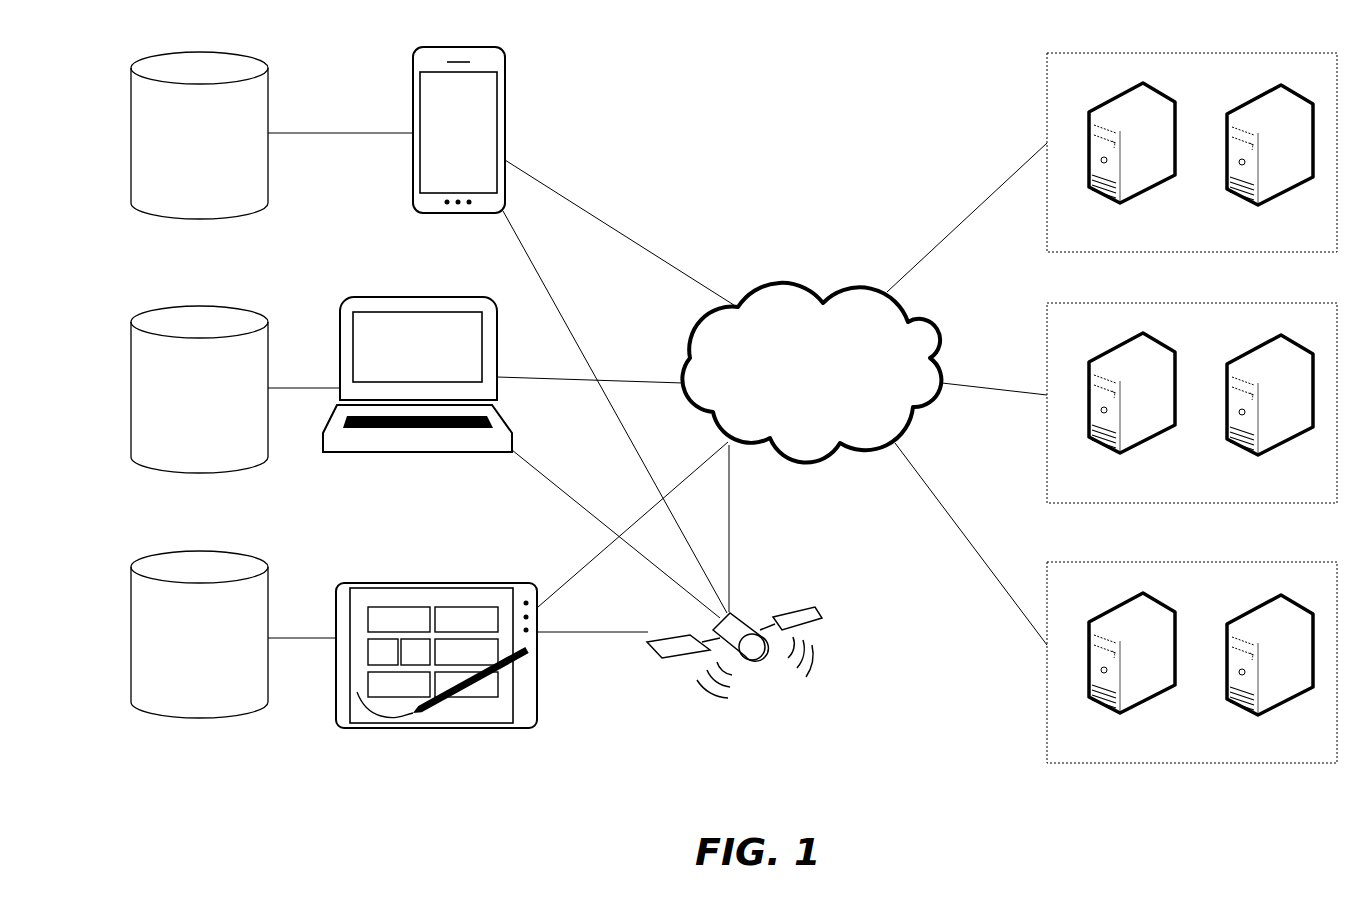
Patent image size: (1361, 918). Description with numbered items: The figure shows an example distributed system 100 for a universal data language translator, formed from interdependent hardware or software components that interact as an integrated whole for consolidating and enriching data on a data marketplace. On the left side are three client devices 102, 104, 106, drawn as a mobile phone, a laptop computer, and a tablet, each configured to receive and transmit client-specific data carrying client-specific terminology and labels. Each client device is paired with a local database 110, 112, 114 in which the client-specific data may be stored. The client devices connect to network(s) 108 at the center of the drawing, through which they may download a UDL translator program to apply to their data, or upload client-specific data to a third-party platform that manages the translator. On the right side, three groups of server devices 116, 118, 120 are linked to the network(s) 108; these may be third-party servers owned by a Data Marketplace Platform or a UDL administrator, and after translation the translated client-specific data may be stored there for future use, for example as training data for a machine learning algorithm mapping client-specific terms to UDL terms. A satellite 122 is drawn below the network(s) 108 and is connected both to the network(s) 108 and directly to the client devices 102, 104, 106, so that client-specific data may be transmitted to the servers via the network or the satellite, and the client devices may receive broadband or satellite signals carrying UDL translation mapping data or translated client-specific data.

The system 100 is at (828, 98).
The client device 102 is at (478, 150).
The client device 104 is at (440, 498).
The client device 106 is at (460, 779).
The network(s) 108 is at (832, 414).
The local database 110 is at (220, 148).
The local database 112 is at (220, 401).
The local database 114 is at (220, 646).
The server device 116 is at (1214, 241).
The server device 118 is at (1214, 489).
The server device 120 is at (1214, 749).
The satellite 122 is at (759, 749).